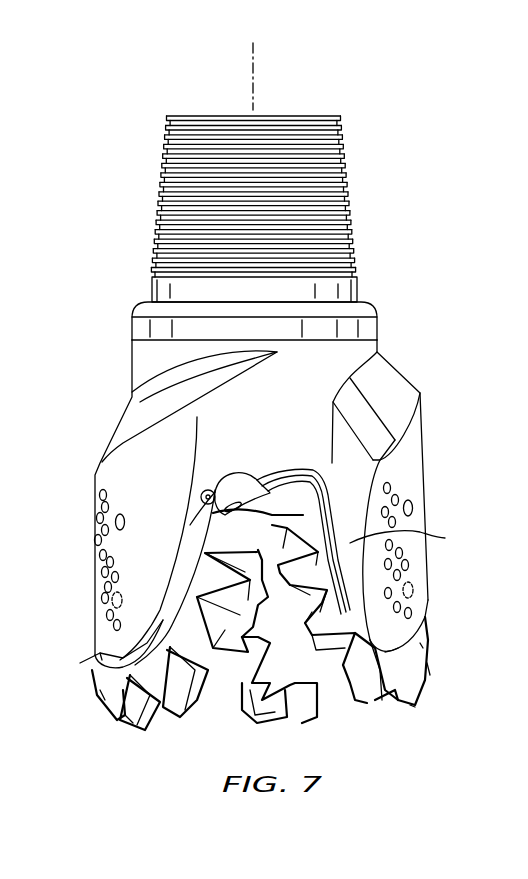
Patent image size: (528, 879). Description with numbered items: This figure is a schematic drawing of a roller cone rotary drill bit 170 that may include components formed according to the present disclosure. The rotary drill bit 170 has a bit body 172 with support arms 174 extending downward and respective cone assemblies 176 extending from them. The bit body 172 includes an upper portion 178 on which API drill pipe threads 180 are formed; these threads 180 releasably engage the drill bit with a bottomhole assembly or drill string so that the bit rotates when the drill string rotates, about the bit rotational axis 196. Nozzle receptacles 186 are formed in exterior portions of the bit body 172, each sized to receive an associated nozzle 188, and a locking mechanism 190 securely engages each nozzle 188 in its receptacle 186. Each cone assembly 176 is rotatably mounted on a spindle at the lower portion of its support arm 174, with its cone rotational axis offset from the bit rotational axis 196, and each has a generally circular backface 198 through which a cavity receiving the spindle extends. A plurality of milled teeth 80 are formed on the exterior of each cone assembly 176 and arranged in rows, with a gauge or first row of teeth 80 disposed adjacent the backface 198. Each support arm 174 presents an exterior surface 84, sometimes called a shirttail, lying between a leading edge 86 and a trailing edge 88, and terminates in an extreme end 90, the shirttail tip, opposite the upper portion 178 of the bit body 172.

The rotary drill bit 170 is at (97, 385).
The bit body 172 is at (302, 405).
The support arm 174 is at (427, 512).
The cone assembly 176 is at (133, 723).
The upper portion 178 is at (246, 209).
The API drill pipe threads 180 is at (347, 205).
The nozzle receptacle 186 is at (235, 493).
The nozzle 188 is at (272, 488).
The locking mechanism 190 is at (200, 497).
The bit rotational axis 196 is at (250, 62).
The backface 198 is at (102, 653).
The exterior surface 84 is at (108, 478).
The leading edge 86 is at (411, 538).
The trailing edge 88 is at (187, 553).
The milled teeth 80 is at (170, 715).
The extreme end 90 is at (100, 690).